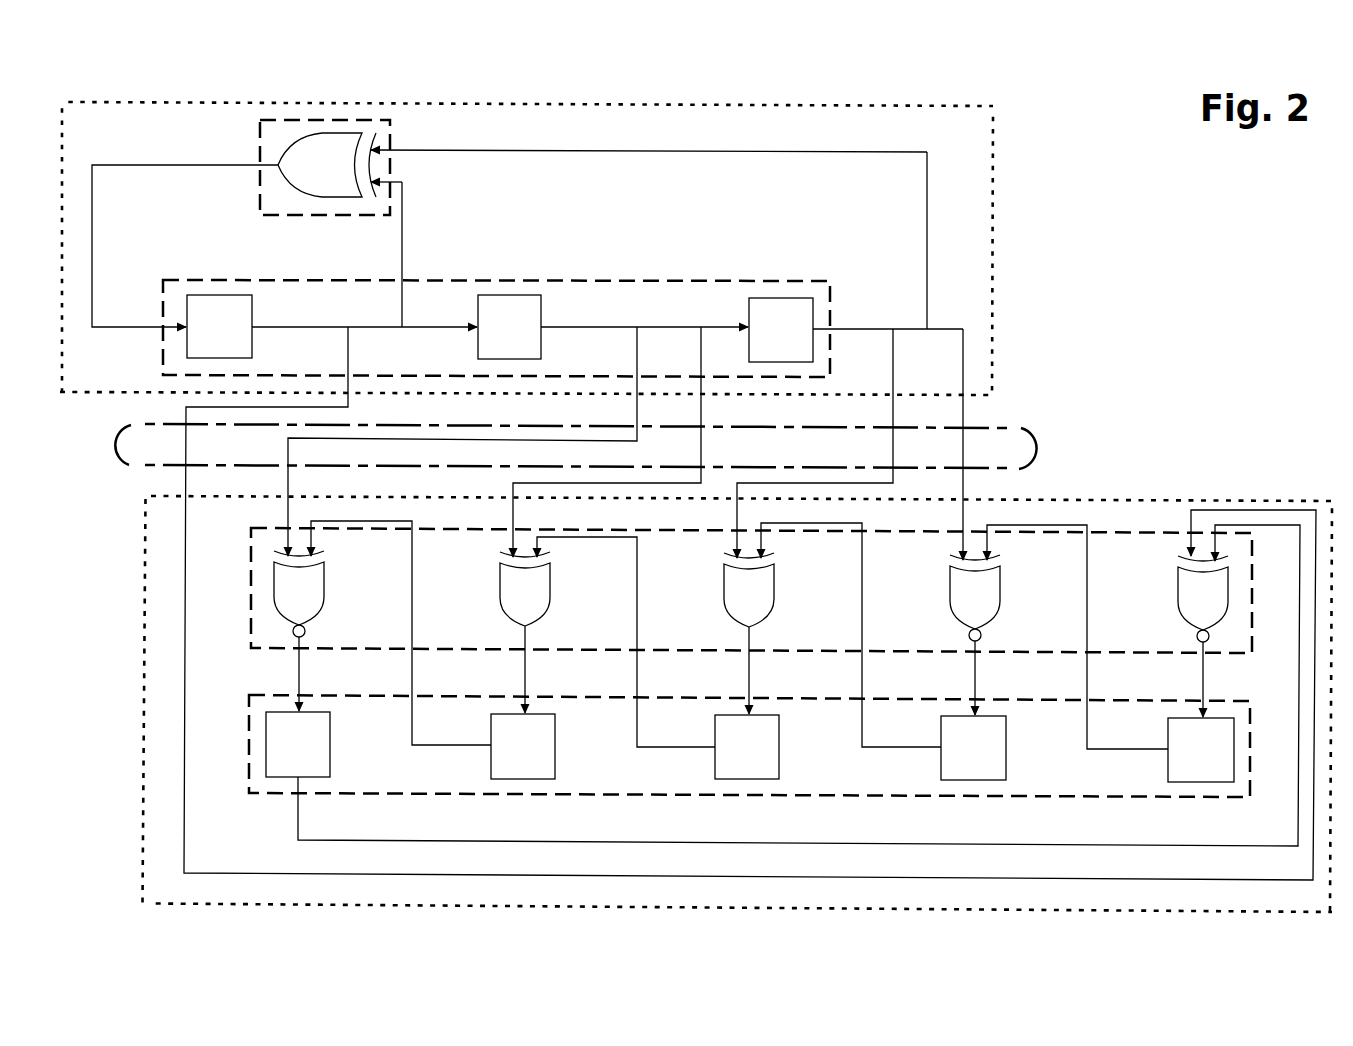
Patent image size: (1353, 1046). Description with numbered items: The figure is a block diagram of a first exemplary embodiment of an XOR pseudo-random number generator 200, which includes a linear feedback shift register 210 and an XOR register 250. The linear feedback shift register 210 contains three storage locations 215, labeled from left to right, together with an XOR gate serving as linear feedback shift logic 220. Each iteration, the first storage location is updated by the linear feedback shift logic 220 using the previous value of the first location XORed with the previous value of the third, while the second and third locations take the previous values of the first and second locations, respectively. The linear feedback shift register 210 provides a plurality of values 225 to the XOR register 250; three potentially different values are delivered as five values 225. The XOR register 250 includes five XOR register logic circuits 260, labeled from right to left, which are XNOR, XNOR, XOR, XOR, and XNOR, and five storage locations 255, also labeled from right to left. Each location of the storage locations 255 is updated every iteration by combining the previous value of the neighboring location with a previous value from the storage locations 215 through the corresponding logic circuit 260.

The XOR pseudo-random number generator 200 is at (1258, 266).
The linear feedback shift register 210 is at (993, 156).
The storage locations 215 is at (662, 280).
The linear feedback shift logic 220 is at (260, 133).
The plurality of values 225 is at (1038, 448).
The XOR register 250 is at (145, 618).
The storage locations 255 is at (249, 742).
The XOR register logic circuits 260 is at (250, 589).